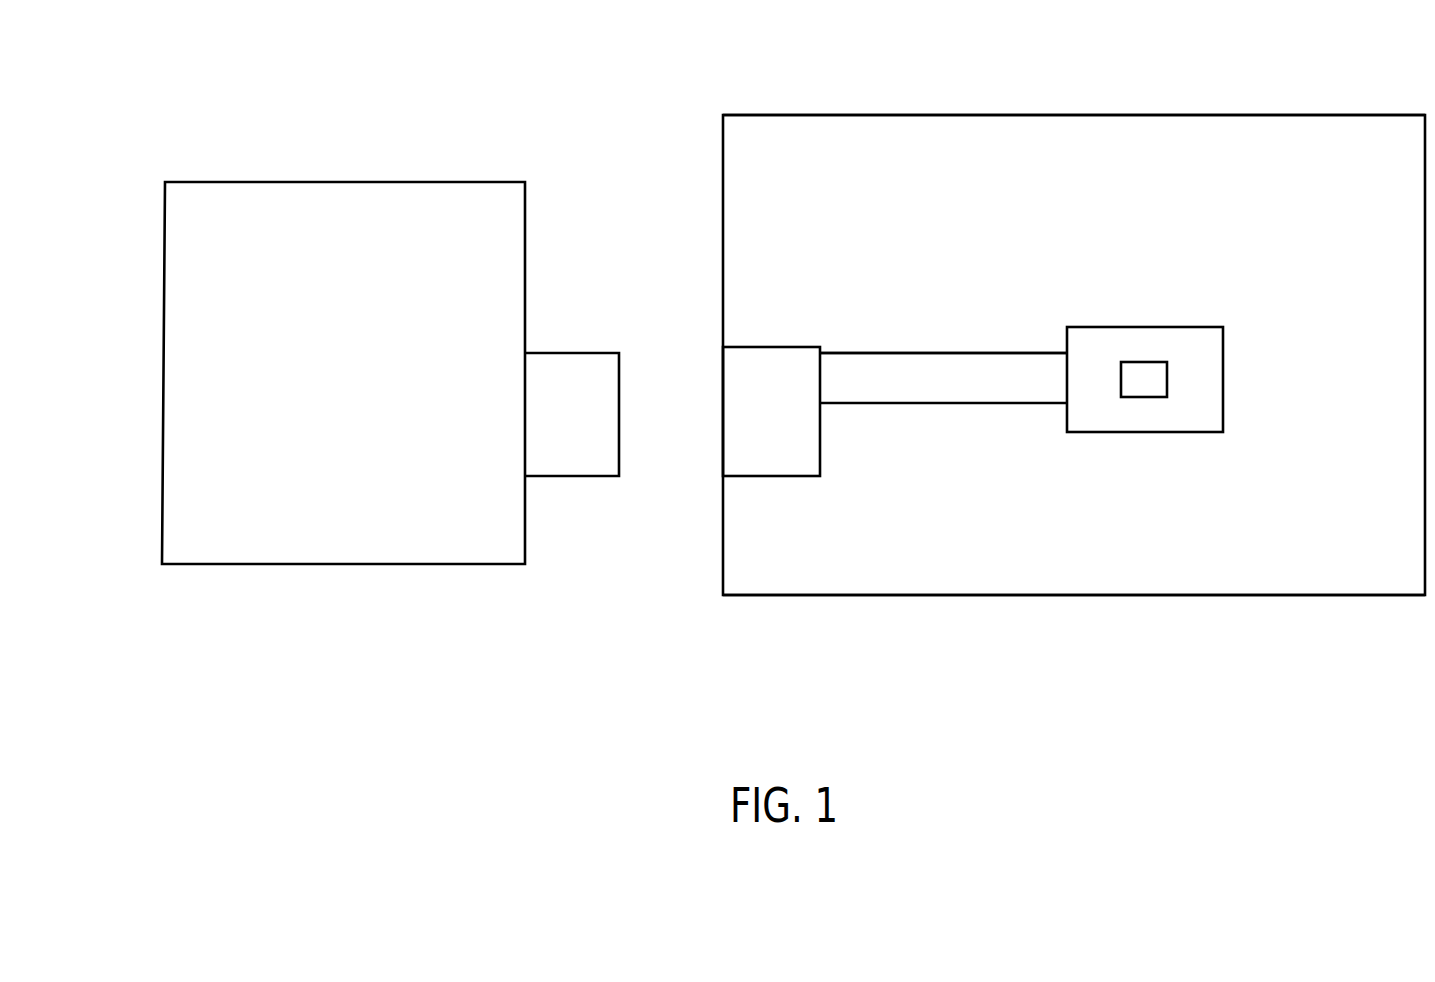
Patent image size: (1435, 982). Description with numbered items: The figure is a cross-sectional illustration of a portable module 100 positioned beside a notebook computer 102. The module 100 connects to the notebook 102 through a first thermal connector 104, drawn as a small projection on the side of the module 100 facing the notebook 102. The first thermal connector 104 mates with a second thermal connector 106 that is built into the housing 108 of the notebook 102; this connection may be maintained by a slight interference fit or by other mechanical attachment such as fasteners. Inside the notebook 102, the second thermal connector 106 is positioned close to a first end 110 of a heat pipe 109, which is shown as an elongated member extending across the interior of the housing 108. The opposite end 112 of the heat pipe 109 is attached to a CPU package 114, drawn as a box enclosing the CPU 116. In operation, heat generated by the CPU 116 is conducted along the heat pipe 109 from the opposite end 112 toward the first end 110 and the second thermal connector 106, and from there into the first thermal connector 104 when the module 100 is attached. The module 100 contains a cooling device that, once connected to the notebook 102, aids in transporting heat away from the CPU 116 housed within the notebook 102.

The portable module 100 is at (204, 53).
The notebook computer 102 is at (718, 74).
The first thermal connector 104 is at (602, 485).
The second thermal connector 106 is at (780, 477).
The housing 108 is at (1096, 114).
The heat pipe 109 is at (972, 413).
The first end 110 is at (842, 343).
The opposite end 112 is at (1047, 343).
The CPU package 114 is at (1187, 326).
The CPU 116 is at (1167, 378).